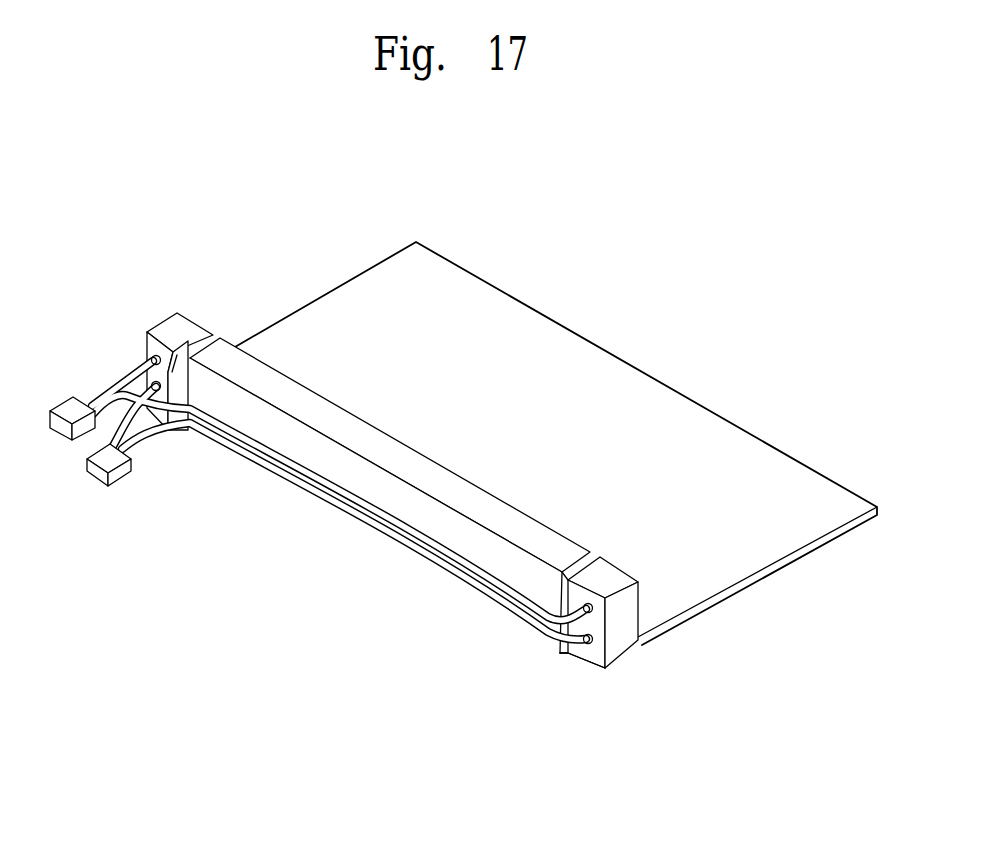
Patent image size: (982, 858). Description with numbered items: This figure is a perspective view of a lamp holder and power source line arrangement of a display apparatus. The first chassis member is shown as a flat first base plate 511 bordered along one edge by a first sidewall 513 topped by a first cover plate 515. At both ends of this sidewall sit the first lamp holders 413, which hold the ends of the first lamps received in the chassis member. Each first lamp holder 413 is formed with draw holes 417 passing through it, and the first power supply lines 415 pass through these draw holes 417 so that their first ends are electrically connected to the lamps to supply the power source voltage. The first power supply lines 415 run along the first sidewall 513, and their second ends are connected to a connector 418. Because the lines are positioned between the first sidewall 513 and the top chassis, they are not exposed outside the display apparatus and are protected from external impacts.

The first lamp holder 413 is at (189, 332).
The first power supply line 415 is at (580, 658).
The draw hole 417 is at (151, 385).
The connector 418 is at (97, 474).
The first base plate 511 is at (637, 392).
The first sidewall 513 is at (383, 498).
The first cover plate 515 is at (470, 503).